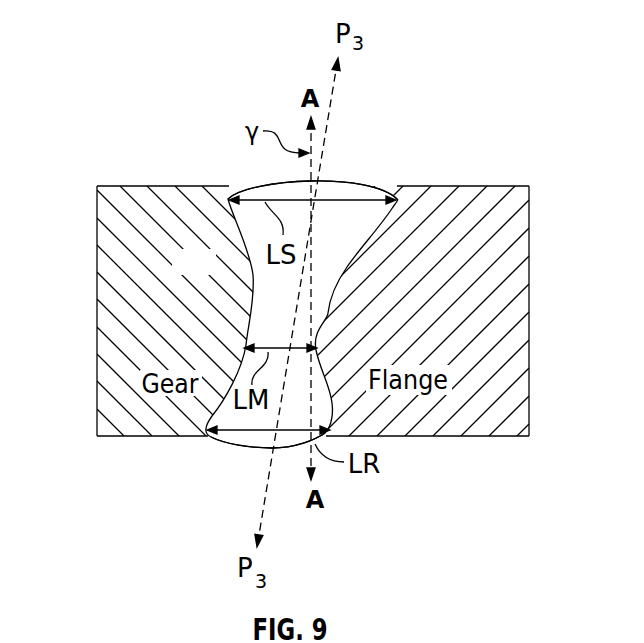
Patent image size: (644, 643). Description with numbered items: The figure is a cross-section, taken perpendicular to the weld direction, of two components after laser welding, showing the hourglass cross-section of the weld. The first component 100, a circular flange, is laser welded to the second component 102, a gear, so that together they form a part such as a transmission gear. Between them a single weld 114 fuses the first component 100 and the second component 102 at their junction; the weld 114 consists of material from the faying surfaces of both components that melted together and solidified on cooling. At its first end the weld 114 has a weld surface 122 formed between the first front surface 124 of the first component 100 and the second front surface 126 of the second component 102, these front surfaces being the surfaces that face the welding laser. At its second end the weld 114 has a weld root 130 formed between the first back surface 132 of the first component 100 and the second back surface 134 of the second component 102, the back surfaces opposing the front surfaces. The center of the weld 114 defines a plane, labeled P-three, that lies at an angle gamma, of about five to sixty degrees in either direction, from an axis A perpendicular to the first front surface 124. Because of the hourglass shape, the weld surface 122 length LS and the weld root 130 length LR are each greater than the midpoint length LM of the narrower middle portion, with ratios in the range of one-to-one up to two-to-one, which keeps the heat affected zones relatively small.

The first component 100 is at (529, 335).
The second component 102 is at (97, 312).
The weld 114 is at (252, 243).
The weld surface 122 is at (325, 151).
The first front surface 124 is at (500, 185).
The second front surface 126 is at (135, 185).
The weld root 130 is at (240, 447).
The first back surface 132 is at (495, 437).
The second back surface 134 is at (127, 437).